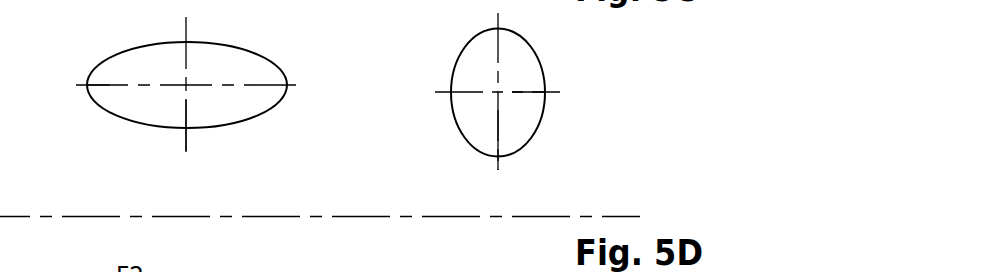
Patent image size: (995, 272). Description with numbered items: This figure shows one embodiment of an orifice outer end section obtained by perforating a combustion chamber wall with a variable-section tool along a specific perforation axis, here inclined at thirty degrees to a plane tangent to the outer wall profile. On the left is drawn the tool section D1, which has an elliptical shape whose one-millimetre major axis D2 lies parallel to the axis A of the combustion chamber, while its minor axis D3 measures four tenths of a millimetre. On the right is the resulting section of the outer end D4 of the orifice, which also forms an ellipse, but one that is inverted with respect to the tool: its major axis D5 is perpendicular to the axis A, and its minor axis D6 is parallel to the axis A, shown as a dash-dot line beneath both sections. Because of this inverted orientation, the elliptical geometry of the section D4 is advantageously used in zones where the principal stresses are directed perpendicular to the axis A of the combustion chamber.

The tool section D1 is at (138, 46).
The major axis of the tool section D2 is at (109, 87).
The minor axis of the tool section D3 is at (188, 118).
The section of the outer end of the orifice D4 is at (543, 62).
The major axis of the orifice outer end section D5 is at (498, 134).
The minor axis of the orifice outer end section D6 is at (528, 92).
The axis of the combustion chamber A is at (560, 217).